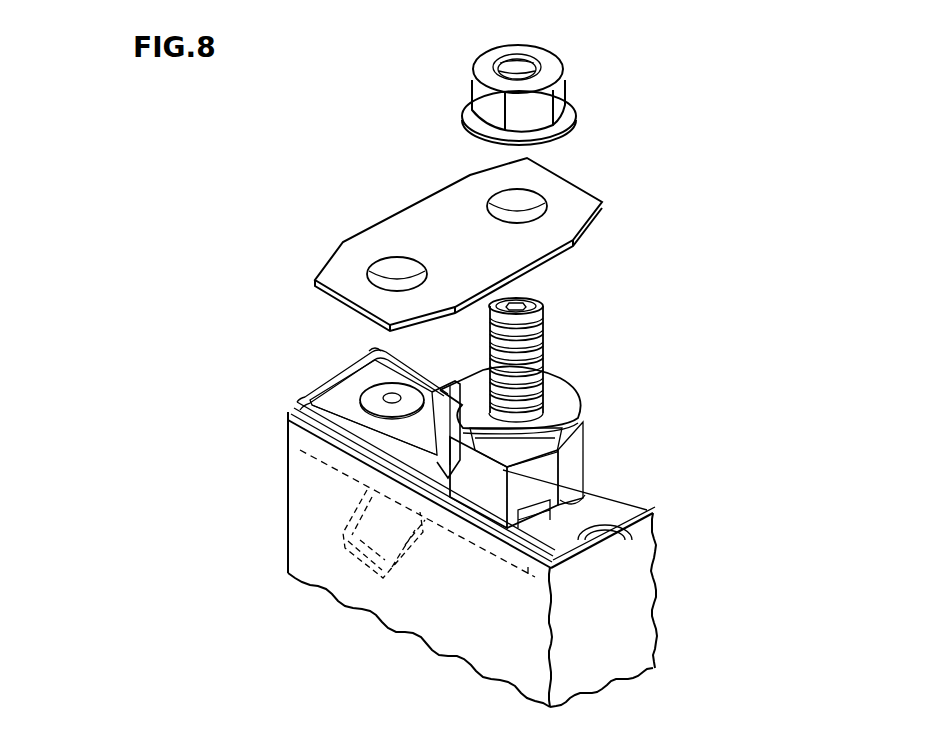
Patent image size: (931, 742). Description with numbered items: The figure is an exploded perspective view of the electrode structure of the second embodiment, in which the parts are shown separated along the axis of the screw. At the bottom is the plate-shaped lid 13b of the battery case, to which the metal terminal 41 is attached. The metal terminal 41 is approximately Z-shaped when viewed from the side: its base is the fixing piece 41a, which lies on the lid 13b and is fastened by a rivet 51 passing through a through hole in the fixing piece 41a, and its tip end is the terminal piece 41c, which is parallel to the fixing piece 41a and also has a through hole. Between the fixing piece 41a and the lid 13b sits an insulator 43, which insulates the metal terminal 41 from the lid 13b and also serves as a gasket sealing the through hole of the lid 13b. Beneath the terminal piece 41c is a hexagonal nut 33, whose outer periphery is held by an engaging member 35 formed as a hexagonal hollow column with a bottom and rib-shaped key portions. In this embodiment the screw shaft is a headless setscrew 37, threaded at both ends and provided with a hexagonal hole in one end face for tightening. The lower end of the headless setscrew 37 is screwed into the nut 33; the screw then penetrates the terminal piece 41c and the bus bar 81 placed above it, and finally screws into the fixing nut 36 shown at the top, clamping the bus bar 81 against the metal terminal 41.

The fixing nut 36 is at (545, 72).
The bus bar 81 is at (572, 205).
The headless setscrew 37 is at (533, 315).
The metal terminal 41 is at (363, 379).
The fixing piece 41a is at (340, 380).
The terminal piece 41c is at (562, 405).
The rivet 51 is at (375, 398).
The lid 13b is at (288, 407).
The insulator 43 is at (332, 422).
The nut 33 is at (570, 438).
The engaging member 35 is at (563, 460).